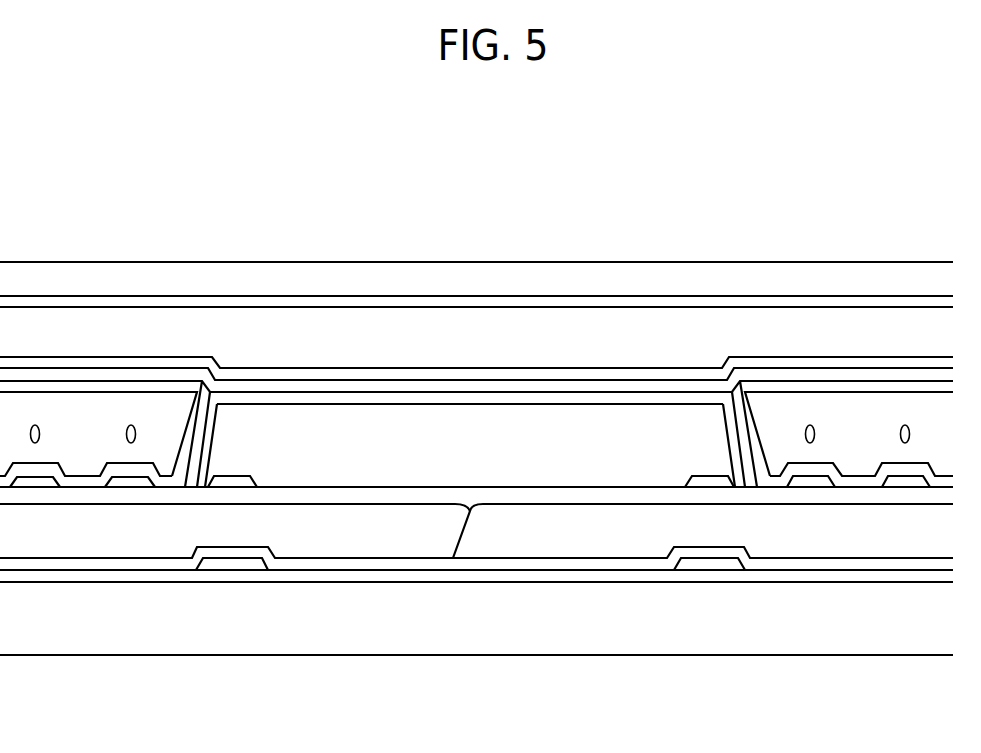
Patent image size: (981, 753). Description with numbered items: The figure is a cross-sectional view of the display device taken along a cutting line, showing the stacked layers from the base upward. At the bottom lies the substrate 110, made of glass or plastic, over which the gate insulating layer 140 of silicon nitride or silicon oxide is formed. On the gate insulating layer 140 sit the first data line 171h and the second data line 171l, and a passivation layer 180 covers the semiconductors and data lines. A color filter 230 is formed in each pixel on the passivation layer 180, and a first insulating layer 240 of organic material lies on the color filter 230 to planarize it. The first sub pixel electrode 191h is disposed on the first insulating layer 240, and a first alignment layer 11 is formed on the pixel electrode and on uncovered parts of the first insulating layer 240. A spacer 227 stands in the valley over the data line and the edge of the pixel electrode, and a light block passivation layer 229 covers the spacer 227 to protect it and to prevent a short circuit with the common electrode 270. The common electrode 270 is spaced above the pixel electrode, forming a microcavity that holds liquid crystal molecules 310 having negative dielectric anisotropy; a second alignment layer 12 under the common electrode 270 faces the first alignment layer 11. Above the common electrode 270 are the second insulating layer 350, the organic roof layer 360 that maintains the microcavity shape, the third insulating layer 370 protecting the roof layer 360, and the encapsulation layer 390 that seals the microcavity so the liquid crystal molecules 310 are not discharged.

The second alignment layer 12 is at (92, 388).
The common electrode 270 is at (155, 377).
The second insulating layer 350 is at (298, 373).
The roof layer 360 is at (372, 335).
The third insulating layer 370 is at (462, 305).
The encapsulation layer 390 is at (536, 280).
The light block passivation layer 229 is at (604, 400).
The first sub pixel electrode 191h is at (30, 482).
The color filter 230 is at (92, 538).
The first alignment layer 11 is at (166, 481).
The second data line 171l is at (233, 565).
The spacer 227 is at (352, 462).
The substrate 110 is at (468, 633).
The first insulating layer 240 is at (542, 495).
The gate insulating layer 140 is at (620, 578).
The first data line 171h is at (710, 565).
The passivation layer 180 is at (845, 562).
The liquid crystal molecules 310 is at (816, 434).